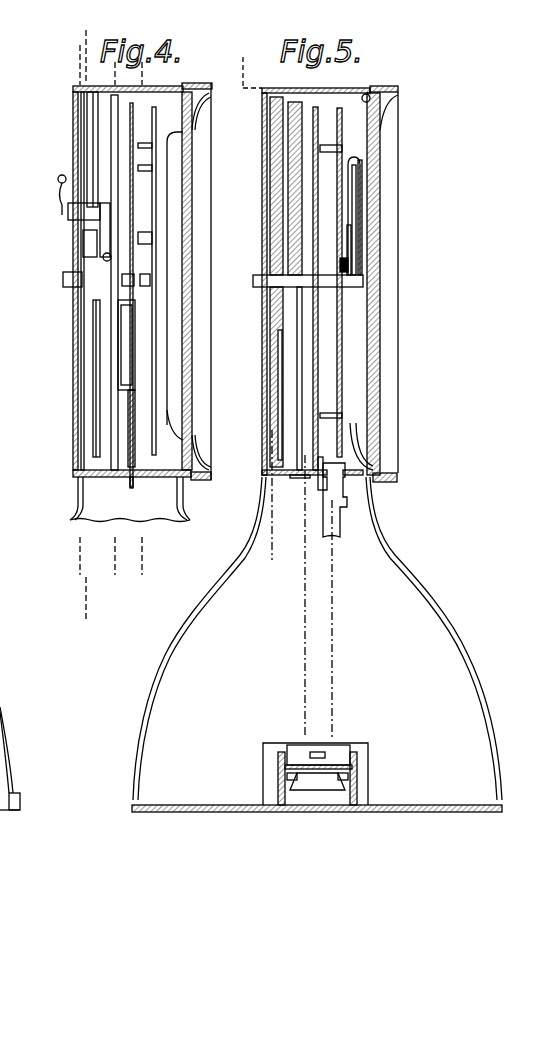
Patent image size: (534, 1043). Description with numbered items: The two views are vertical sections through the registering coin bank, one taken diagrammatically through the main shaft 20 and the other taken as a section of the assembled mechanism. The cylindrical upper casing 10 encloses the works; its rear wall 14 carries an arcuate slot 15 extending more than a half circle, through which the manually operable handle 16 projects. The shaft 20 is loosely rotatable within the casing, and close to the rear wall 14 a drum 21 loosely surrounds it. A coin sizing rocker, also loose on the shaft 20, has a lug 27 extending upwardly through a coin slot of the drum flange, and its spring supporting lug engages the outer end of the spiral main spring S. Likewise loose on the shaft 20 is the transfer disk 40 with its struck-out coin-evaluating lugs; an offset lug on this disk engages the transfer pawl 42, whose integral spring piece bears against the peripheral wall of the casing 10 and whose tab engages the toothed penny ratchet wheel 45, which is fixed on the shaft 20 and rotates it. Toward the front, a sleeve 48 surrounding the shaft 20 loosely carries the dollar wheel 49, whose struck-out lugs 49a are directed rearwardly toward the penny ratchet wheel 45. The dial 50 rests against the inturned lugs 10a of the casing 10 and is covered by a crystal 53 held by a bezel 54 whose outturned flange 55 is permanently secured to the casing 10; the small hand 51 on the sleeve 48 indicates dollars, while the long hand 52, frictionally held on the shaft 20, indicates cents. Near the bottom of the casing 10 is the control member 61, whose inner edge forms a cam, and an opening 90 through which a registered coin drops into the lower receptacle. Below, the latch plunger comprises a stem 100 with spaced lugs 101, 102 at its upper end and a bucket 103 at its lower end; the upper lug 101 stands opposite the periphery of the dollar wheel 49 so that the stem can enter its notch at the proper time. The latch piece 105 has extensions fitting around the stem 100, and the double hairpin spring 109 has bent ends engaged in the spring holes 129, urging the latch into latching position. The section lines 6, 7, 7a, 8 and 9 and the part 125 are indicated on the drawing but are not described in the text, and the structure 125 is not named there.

In FIG. 4, the upper casing 10 is at (82, 84).
In FIG. 5, the upper casing 10 is at (300, 88).
In FIG. 5, the inturned lugs 10a is at (372, 97).
In FIG. 4, the rear wall 14 is at (74, 367).
In FIG. 4, the arcuate slot 15 is at (74, 125).
In FIG. 4, the handle 16 is at (58, 183).
In FIG. 5, the handle 16 is at (253, 57).
In FIG. 4, the shaft 20 is at (63, 281).
In FIG. 5, the shaft 20 is at (256, 288).
In FIG. 4, the drum 21 is at (84, 150).
In FIG. 4, the lug 27 is at (90, 98).
In FIG. 4, the transfer disk 40 is at (113, 128).
In FIG. 4, the transfer pawl 42 is at (122, 367).
In FIG. 4, the penny ratchet wheel 45 is at (136, 112).
In FIG. 5, the penny ratchet wheel 45 is at (318, 108).
In FIG. 5, the sleeve 48 is at (346, 267).
In FIG. 5, the dollar wheel 49 is at (340, 180).
In FIG. 4, the struck out lugs 49a is at (145, 240).
In FIG. 5, the struck out lugs 49a is at (330, 147).
In FIG. 4, the dial 50 is at (172, 242).
In FIG. 5, the dial 50 is at (362, 137).
In FIG. 5, the small hand 51 is at (350, 230).
In FIG. 5, the long hand 52 is at (358, 203).
In FIG. 4, the crystal 53 is at (192, 150).
In FIG. 5, the crystal 53 is at (374, 313).
In FIG. 4, the bezel 54 is at (196, 452).
In FIG. 5, the bezel 54 is at (377, 457).
In FIG. 5, the outturned flange 55 is at (385, 483).
In FIG. 4, the control member 61 is at (138, 482).
In FIG. 5, the control member 61 is at (320, 485).
In FIG. 5, the opening 90 is at (303, 477).
In FIG. 5, the stem 100 is at (335, 642).
In FIG. 5, the upper lug 101 is at (352, 480).
In FIG. 5, the lug 102 is at (345, 505).
In FIG. 5, the bucket 103 is at (322, 808).
In FIG. 5, the latch piece 105 is at (337, 752).
In FIG. 5, the double hairpin spring 109 is at (352, 768).
In FIG. 5, the housing box 125 is at (365, 758).
In FIG. 5, the spring holes 129 is at (283, 781).
In FIG. 4, the main spring S is at (105, 218).
In FIG. 4, the section line 6 is at (79, 70).
In FIG. 4, the section line 7 is at (130, 76).
In FIG. 4, the section line 7a is at (84, 36).
In FIG. 4, the section line 8 is at (165, 77).
In FIG. 5, the section line 9 is at (307, 78).